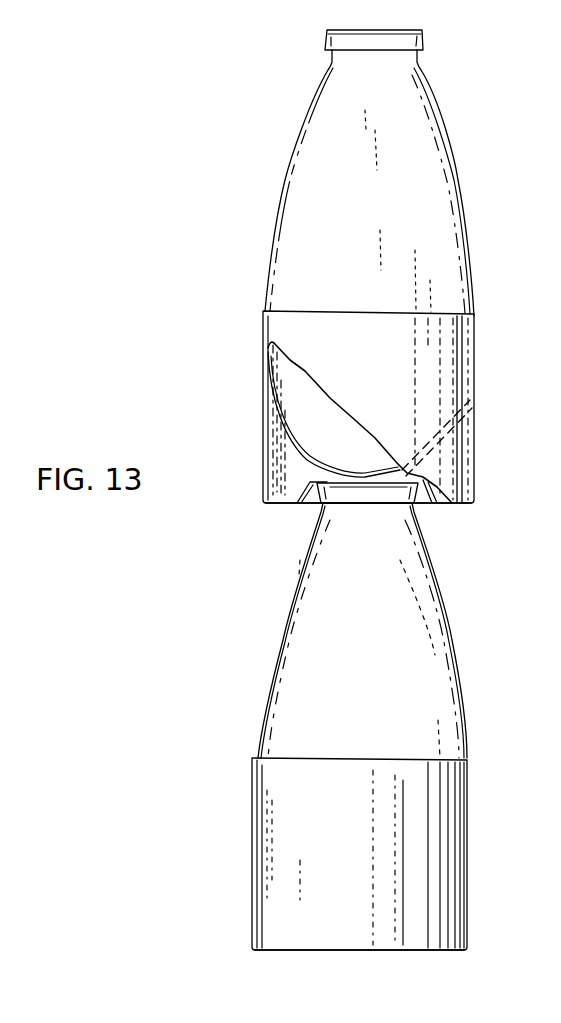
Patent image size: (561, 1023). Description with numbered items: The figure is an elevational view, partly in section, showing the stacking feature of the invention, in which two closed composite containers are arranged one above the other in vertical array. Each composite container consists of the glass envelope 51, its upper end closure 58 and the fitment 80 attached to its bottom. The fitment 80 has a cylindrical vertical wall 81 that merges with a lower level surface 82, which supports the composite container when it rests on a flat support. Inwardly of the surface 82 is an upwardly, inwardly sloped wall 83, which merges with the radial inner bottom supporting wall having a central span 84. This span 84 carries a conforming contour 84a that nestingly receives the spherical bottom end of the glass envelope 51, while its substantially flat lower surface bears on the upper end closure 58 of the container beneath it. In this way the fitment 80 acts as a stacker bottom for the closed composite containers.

The glass envelope 51 is at (388, 243).
The upper end closure 58 is at (424, 40).
The fitment 80 is at (387, 363).
The cylindrical vertical wall 81 is at (262, 425).
The lower level surface 82 is at (276, 505).
The upwardly, inwardly sloped wall 83 is at (305, 490).
The span 84 is at (360, 475).
The conforming contour 84a is at (378, 473).